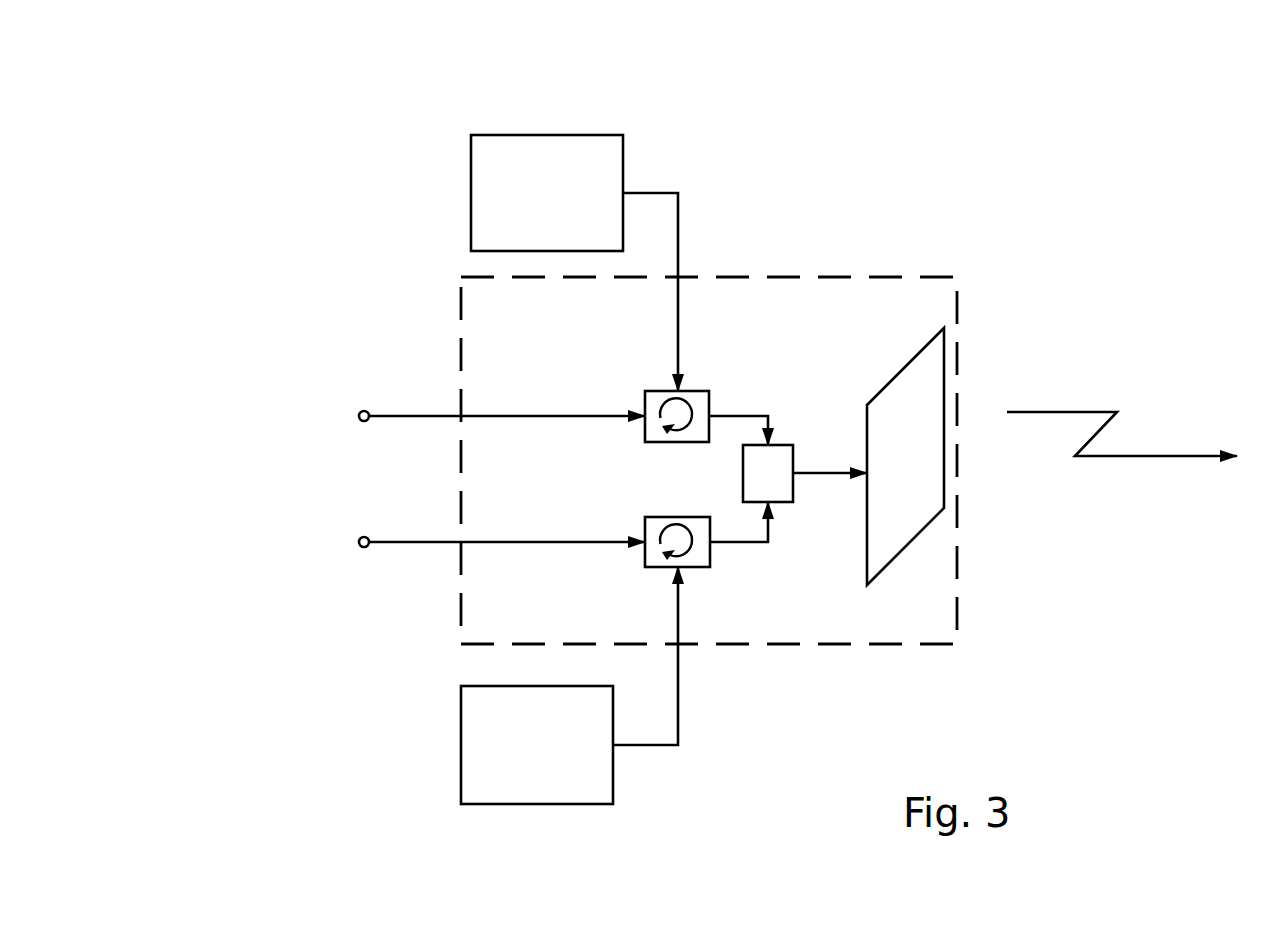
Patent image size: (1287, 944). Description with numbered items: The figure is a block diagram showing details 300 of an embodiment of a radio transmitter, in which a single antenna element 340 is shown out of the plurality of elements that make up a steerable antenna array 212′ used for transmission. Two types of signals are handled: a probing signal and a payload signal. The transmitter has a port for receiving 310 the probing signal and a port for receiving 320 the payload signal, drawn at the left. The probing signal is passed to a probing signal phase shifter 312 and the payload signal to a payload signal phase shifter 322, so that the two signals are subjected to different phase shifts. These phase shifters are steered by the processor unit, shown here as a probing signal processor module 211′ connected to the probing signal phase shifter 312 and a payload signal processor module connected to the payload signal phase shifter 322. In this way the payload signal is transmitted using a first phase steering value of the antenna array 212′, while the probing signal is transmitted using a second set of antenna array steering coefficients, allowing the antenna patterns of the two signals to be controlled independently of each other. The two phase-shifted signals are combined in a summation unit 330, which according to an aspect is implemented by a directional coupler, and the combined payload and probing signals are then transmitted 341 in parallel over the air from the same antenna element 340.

The details of radio transmitter 300 is at (990, 189).
The probing signal processor module 211′ is at (509, 117).
The steerable antenna array 212′ is at (841, 258).
The port for receiving the probing signal 310 is at (365, 385).
The port for receiving the payload signal 320 is at (364, 572).
The probing signal phase shifter 312 is at (653, 391).
The payload signal phase shifter 322 is at (650, 517).
The summation unit 330 is at (795, 487).
The antenna element 340 is at (893, 370).
The transmission over the air 341 is at (1170, 395).